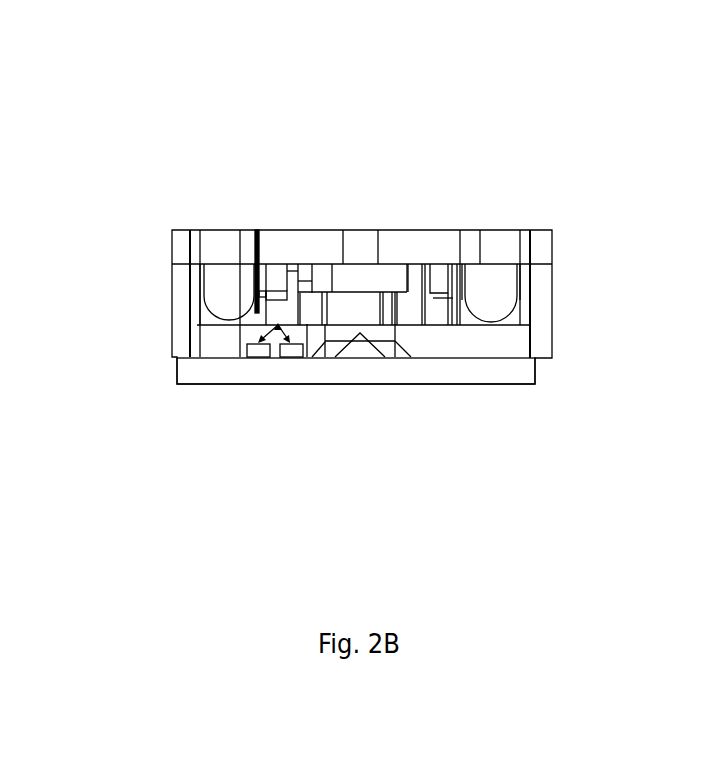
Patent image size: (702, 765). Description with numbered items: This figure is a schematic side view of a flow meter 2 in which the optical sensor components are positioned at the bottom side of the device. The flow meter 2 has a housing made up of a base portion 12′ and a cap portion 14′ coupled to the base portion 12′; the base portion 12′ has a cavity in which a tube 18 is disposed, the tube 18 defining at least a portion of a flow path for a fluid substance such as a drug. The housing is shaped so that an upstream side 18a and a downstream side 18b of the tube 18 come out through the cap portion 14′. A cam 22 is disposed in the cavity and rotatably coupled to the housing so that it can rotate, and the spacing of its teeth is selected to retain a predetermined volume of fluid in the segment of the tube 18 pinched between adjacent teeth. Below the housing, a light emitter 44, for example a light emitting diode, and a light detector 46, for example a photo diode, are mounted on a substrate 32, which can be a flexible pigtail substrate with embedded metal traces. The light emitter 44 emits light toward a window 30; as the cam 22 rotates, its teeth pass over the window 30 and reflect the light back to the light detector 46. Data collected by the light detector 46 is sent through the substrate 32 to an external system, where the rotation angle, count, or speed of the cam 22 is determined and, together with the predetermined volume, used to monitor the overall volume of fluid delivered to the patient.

The flow meter 2 is at (152, 150).
The cap portion 14′ is at (537, 243).
The base portion 12′ is at (533, 322).
The substrate 32 is at (513, 373).
The downstream side 18b is at (233, 238).
The upstream side 18a is at (496, 236).
The tube 18 is at (492, 302).
The cam 22 is at (431, 258).
The window 30 is at (250, 317).
The light detector 46 is at (260, 350).
The light emitter 44 is at (290, 352).